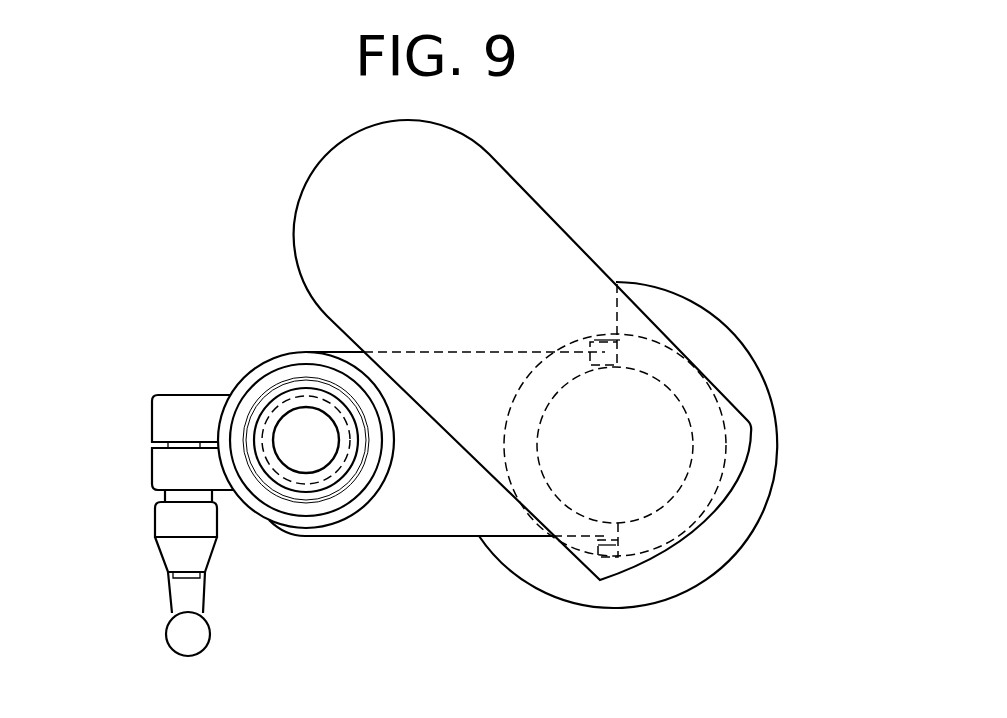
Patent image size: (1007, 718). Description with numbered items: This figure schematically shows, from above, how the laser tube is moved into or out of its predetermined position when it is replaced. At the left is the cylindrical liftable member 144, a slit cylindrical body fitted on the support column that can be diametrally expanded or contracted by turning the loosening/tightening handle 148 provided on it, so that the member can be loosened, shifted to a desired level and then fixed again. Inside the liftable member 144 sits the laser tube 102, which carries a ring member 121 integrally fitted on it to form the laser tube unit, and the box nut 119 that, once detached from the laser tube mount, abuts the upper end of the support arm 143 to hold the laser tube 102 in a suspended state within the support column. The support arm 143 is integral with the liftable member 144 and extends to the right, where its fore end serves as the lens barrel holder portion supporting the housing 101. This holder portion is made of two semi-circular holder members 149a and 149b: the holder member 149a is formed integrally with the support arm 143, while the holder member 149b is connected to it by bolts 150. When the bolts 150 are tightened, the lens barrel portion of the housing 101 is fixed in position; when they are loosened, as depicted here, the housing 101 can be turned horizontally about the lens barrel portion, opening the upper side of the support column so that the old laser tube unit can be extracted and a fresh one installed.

The housing 101 is at (523, 188).
The laser tube 102 is at (300, 473).
The box nut 119 is at (350, 508).
The ring member 121 is at (300, 398).
The support arm 143 is at (422, 532).
The liftable member 144 is at (255, 373).
The loosening/tightening handle 148 is at (160, 547).
The holder member 149a is at (528, 495).
The holder member 149b is at (702, 392).
The bolts 150 is at (625, 278).